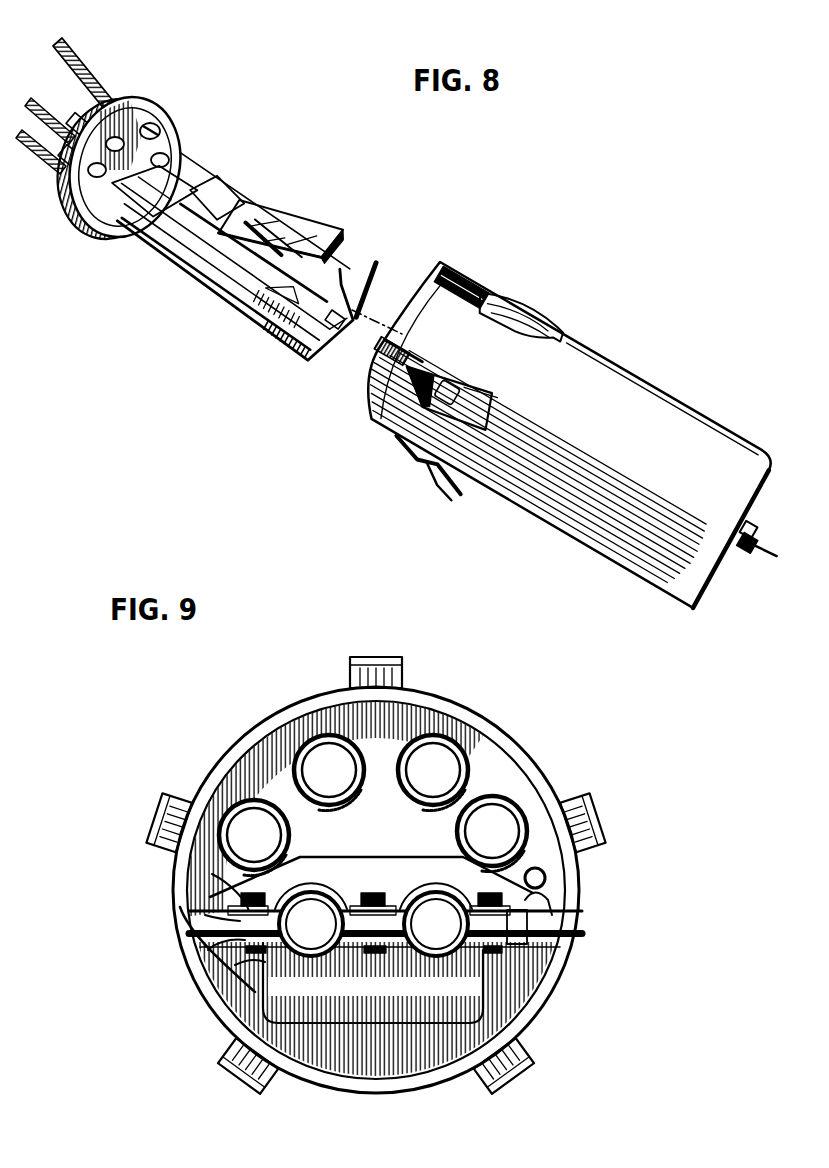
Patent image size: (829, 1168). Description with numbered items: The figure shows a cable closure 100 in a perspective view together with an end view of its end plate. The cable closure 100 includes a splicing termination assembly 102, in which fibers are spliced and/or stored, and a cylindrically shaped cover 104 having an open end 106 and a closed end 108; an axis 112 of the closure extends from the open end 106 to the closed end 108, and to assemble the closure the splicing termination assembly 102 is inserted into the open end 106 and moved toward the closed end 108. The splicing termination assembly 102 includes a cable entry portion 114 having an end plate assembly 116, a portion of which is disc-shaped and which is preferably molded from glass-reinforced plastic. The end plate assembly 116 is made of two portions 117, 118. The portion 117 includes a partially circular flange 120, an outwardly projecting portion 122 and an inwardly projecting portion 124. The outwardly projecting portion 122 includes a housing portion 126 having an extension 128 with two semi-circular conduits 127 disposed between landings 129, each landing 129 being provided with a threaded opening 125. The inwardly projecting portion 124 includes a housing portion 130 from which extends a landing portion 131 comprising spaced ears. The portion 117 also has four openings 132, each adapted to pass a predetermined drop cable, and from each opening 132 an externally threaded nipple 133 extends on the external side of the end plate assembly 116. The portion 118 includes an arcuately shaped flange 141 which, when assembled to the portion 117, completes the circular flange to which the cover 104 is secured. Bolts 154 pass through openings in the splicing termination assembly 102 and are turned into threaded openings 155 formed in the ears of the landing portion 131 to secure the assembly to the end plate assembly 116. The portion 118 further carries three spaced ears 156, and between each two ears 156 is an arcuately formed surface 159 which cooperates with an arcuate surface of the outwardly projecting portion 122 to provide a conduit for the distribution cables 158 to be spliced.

In FIG. 8, the cable closure 100 is at (417, 171).
In FIG. 8, the splicing termination assembly 102 is at (270, 443).
In FIG. 8, the cover 104 is at (621, 378).
In FIG. 8, the open end 106 is at (457, 363).
In FIG. 8, the closed end 108 is at (720, 572).
In FIG. 8, the axis 112 is at (765, 553).
In FIG. 8, the cable entry portion 114 is at (170, 108).
In FIG. 8, the end plate assembly 116 is at (112, 102).
In FIG. 9, the portion of end plate assembly 117 is at (580, 862).
In FIG. 9, the portion of end plate assembly 118 is at (550, 960).
In FIG. 9, the partially circular flange 120 is at (446, 698).
In FIG. 9, the outwardly projecting portion 122 is at (575, 905).
In FIG. 8, the inwardly projecting portion 124 is at (190, 176).
In FIG. 9, the threaded opening 125 is at (212, 874).
In FIG. 9, the housing portion 126 is at (330, 884).
In FIG. 9, the semi-circular conduit 127 is at (439, 904).
In FIG. 9, the extension 128 is at (385, 901).
In FIG. 9, the landing 129 is at (205, 915).
In FIG. 8, the housing portion 130 is at (102, 237).
In FIG. 8, the landing portion 131 is at (190, 278).
In FIG. 9, the opening 132 is at (439, 768).
In FIG. 9, the externally threaded nipple 133 is at (500, 820).
In FIG. 9, the arcuately shaped flange 141 is at (398, 1083).
In FIG. 8, the bolt 154 is at (217, 185).
In FIG. 8, the threaded opening 155 is at (203, 180).
In FIG. 9, the ear 156 is at (208, 950).
In FIG. 8, the distribution cable 158 is at (51, 108).
In FIG. 9, the arcuately formed surface 159 is at (235, 965).